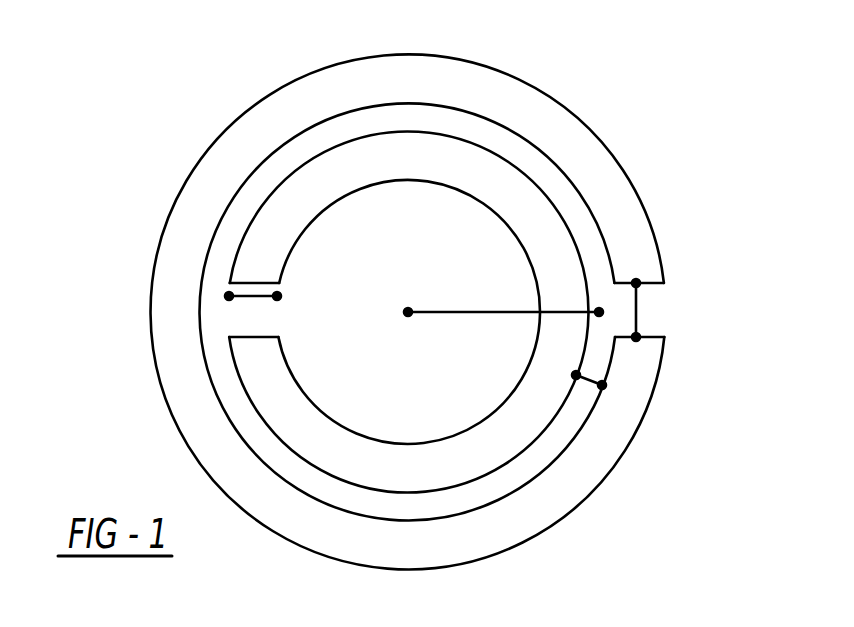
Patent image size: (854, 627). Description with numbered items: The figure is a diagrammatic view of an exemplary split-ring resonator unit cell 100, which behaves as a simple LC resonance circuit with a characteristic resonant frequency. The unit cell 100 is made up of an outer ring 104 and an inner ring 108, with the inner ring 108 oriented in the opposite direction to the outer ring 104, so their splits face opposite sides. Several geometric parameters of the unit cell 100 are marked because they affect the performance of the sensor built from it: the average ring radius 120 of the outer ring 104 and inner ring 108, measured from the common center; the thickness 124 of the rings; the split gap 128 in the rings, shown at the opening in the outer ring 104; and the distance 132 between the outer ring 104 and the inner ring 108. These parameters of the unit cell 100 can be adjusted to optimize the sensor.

The split-ring resonator unit cell 100 is at (207, 90).
The outer ring 104 is at (535, 117).
The inner ring 108 is at (257, 230).
The average ring radius 120 is at (475, 313).
The thickness 124 is at (252, 298).
The split gap 128 is at (637, 308).
The distance 132 is at (588, 380).